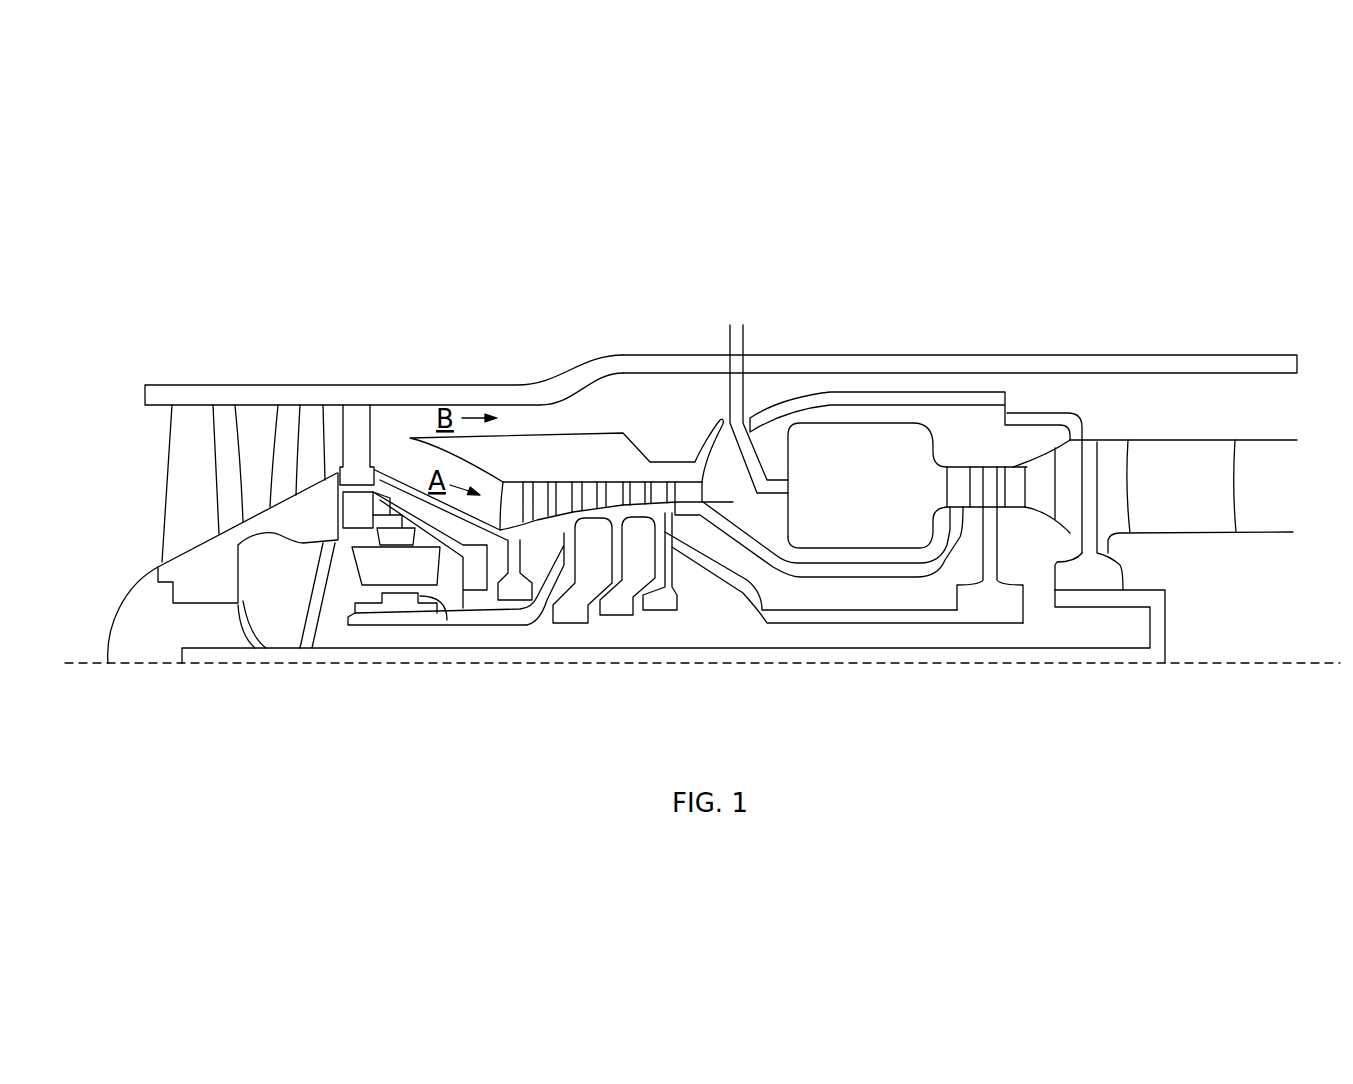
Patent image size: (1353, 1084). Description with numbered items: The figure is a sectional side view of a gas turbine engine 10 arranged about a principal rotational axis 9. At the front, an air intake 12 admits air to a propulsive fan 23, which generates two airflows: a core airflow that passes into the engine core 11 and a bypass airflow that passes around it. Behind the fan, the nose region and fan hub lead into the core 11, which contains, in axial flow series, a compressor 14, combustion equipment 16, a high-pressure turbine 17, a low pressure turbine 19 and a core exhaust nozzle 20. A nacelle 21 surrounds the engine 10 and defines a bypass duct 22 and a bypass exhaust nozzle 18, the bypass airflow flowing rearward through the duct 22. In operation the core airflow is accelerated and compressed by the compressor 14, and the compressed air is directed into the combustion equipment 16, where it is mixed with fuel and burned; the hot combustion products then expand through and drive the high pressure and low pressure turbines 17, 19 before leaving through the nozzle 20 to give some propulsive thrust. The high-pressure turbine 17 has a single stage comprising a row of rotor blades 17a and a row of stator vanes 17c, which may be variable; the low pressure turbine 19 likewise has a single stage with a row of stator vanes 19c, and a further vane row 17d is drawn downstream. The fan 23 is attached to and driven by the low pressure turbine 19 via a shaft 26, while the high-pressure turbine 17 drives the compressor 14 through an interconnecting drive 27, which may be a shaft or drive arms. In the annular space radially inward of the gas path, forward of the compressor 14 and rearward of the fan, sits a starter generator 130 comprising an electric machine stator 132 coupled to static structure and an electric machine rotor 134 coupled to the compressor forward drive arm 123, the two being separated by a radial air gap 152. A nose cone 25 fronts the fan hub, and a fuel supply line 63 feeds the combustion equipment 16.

The principal rotational axis 9 is at (73, 668).
The gas turbine engine 10 is at (659, 256).
The core 11 is at (595, 417).
The air intake 12 is at (133, 459).
The compressor 14 is at (598, 571).
The combustion equipment 16 is at (832, 530).
The high-pressure turbine 17 is at (1033, 571).
The rotor blades 17a is at (990, 475).
The stator vanes 17c is at (1040, 462).
The turbine outlet guide vane 17d is at (1090, 443).
The bypass exhaust nozzle 18 is at (1287, 410).
The low pressure turbine 19 is at (1157, 563).
The stator vanes 19c is at (1182, 450).
The core exhaust nozzle 20 is at (1278, 492).
The nacelle 21 is at (152, 385).
The bypass duct 22 is at (845, 407).
The propulsive fan 23 is at (313, 420).
The nose cone 25 is at (122, 603).
The shaft 26 is at (208, 657).
The interconnecting drive 27 is at (765, 617).
The fuel injector 63 is at (737, 357).
The compressor forward drive arm 123 is at (477, 617).
The starter generator 130 is at (329, 628).
The electric machine stator 132 is at (400, 560).
The electric machine rotor 134 is at (393, 608).
The radial air gap 152 is at (448, 603).